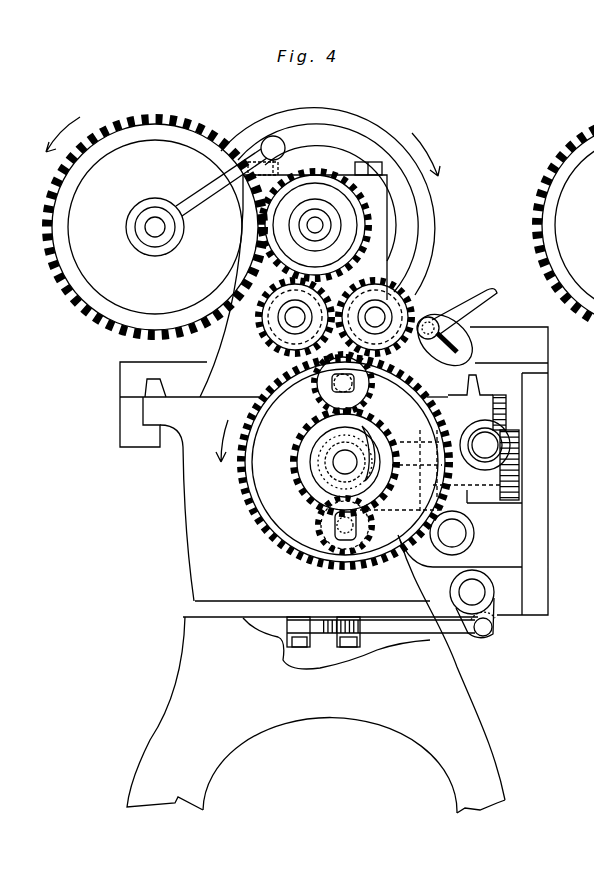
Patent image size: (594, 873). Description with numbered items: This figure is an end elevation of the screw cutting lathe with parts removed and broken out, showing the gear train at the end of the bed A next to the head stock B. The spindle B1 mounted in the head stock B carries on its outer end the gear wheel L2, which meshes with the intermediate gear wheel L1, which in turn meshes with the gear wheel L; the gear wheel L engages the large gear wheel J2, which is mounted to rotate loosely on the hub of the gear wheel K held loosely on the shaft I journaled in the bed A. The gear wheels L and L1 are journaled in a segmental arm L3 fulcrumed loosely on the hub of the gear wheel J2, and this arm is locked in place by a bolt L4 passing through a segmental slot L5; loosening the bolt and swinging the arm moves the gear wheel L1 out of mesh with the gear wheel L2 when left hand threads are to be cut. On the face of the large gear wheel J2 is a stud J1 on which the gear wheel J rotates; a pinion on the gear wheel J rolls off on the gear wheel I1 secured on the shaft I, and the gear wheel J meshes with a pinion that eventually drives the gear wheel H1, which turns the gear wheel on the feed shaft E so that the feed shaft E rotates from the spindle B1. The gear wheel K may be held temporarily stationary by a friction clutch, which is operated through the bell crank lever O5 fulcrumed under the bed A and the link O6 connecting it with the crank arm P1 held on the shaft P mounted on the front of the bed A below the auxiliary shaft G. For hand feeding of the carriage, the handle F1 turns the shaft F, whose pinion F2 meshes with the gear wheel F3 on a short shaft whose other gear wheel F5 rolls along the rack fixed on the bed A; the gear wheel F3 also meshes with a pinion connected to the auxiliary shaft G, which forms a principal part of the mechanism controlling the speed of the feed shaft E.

The bed A is at (198, 498).
The head stock B is at (380, 263).
The spindle B1 is at (323, 225).
The gear wheel L2 is at (272, 248).
The intermediate gear wheel L1 is at (258, 319).
The gear wheel L is at (407, 303).
The segmental arm L3 is at (438, 317).
The bolt L4 is at (470, 333).
The segmental slot L5 is at (463, 352).
The shaft I is at (340, 462).
The large gear wheel J2 is at (283, 540).
The gear wheel I1 is at (386, 455).
The gear wheel K is at (381, 471).
The gear wheel H1 is at (363, 447).
The handle F1 is at (420, 427).
The gear wheel F5 is at (425, 480).
The gear wheel J is at (370, 553).
The stud J1 is at (345, 535).
The gear wheel F3 is at (500, 410).
The shaft F is at (476, 493).
The pinion F2 is at (520, 487).
The feed shaft E is at (490, 447).
The auxiliary shaft G is at (458, 533).
The shaft P is at (480, 592).
The crank arm P1 is at (503, 618).
The link O6 is at (425, 628).
The bell crank lever O5 is at (320, 640).